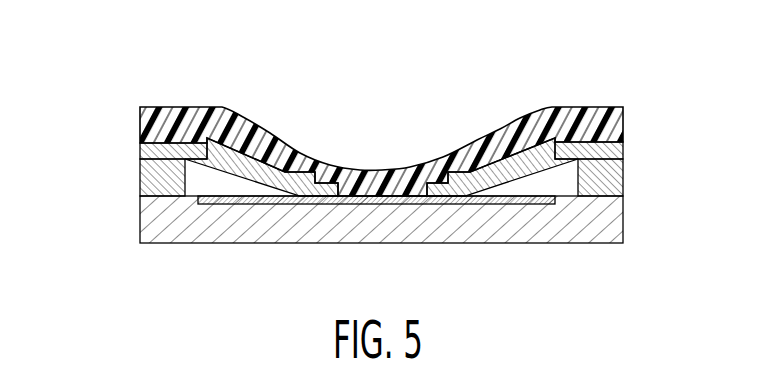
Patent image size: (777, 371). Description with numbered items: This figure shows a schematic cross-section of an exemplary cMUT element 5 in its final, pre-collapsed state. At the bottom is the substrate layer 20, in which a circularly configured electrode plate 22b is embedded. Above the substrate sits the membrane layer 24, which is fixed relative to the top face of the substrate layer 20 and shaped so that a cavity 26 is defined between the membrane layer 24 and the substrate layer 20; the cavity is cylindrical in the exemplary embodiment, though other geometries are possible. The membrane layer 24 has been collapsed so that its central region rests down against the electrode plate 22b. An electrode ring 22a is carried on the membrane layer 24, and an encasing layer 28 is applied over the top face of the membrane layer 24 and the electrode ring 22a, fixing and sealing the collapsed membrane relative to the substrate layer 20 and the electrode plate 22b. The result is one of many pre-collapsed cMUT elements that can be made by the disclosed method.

The cMUT element 5 is at (381, 162).
The substrate layer 20 is at (613, 225).
The electrode ring 22a is at (243, 152).
The electrode plate 22b is at (262, 203).
The membrane layer 24 is at (145, 150).
The cavity 26 is at (198, 185).
The encasing layer 28 is at (140, 125).